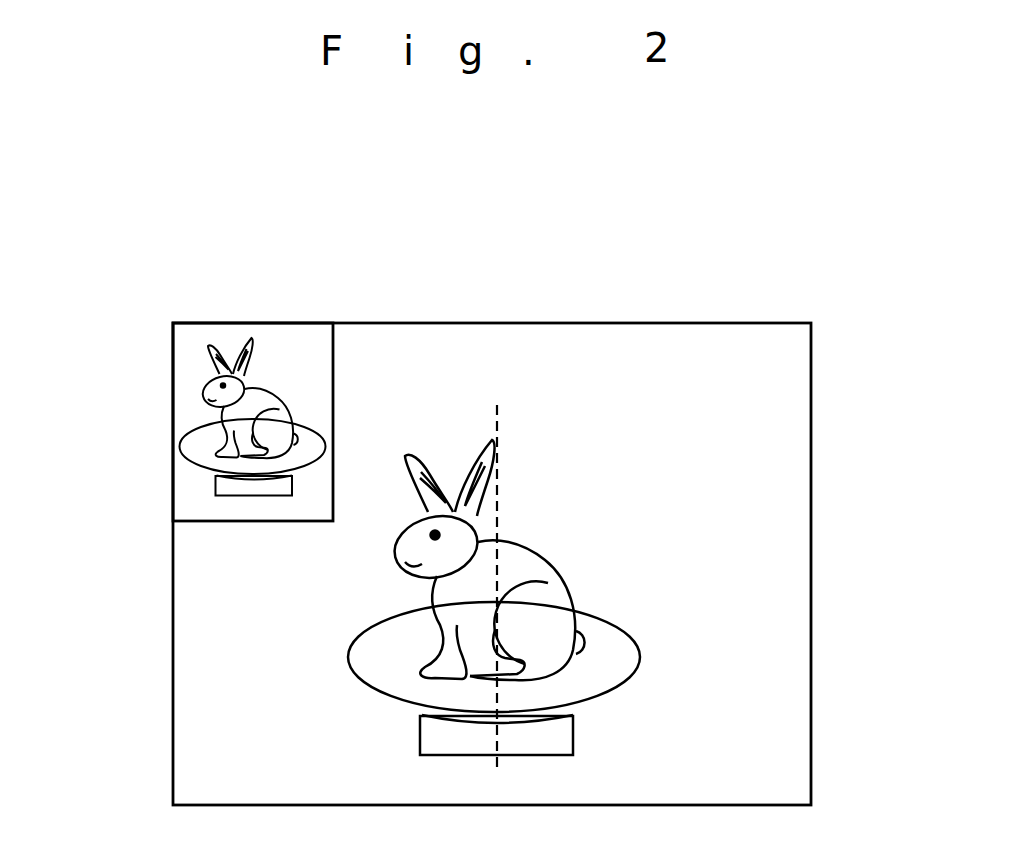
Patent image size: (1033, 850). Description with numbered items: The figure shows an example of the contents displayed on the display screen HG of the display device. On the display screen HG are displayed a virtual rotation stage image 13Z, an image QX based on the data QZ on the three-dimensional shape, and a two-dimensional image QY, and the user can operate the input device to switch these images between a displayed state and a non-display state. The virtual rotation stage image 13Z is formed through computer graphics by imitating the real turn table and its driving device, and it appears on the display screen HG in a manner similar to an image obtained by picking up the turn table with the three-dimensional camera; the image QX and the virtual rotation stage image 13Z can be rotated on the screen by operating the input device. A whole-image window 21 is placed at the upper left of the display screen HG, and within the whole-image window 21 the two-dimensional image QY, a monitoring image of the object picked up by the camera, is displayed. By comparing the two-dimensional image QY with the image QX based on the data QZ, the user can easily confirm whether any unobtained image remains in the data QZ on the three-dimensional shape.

The display screen HG is at (607, 350).
The whole-image window 21 is at (290, 350).
The two-dimensional image QY is at (205, 390).
The image based on the data on the three-dimensional shape QX is at (517, 565).
The data on the three-dimensional shape QZ is at (697, 574).
The virtual rotation stage image 13Z is at (620, 650).